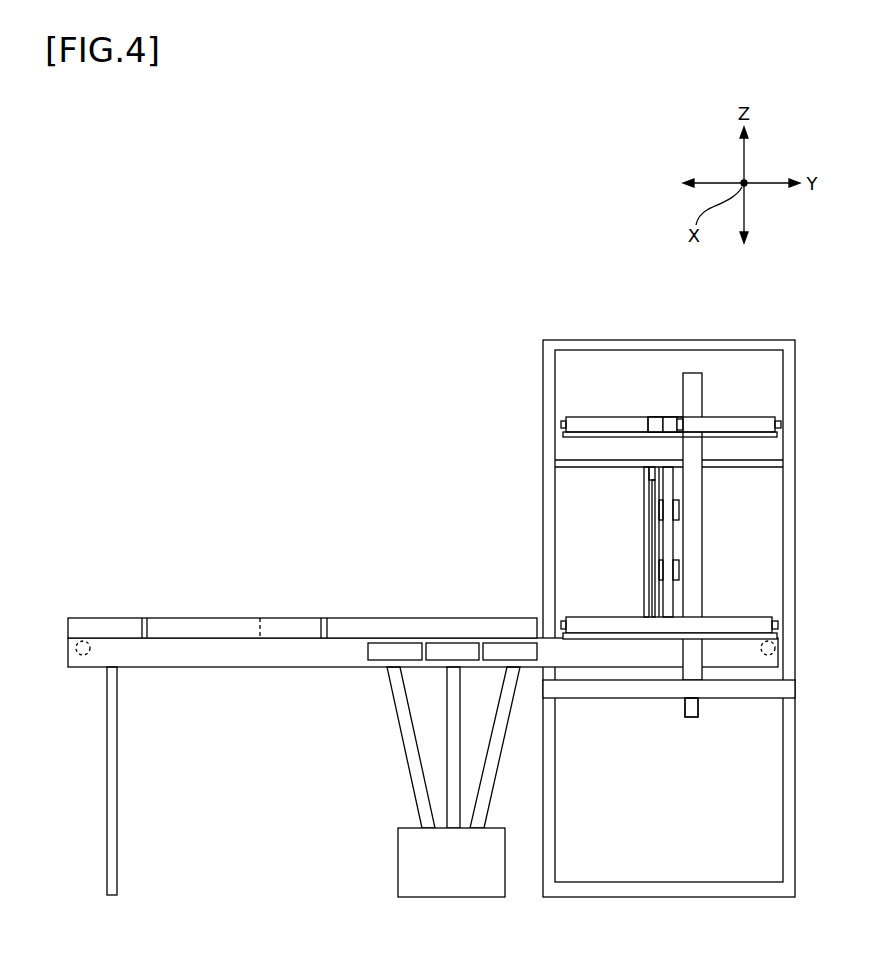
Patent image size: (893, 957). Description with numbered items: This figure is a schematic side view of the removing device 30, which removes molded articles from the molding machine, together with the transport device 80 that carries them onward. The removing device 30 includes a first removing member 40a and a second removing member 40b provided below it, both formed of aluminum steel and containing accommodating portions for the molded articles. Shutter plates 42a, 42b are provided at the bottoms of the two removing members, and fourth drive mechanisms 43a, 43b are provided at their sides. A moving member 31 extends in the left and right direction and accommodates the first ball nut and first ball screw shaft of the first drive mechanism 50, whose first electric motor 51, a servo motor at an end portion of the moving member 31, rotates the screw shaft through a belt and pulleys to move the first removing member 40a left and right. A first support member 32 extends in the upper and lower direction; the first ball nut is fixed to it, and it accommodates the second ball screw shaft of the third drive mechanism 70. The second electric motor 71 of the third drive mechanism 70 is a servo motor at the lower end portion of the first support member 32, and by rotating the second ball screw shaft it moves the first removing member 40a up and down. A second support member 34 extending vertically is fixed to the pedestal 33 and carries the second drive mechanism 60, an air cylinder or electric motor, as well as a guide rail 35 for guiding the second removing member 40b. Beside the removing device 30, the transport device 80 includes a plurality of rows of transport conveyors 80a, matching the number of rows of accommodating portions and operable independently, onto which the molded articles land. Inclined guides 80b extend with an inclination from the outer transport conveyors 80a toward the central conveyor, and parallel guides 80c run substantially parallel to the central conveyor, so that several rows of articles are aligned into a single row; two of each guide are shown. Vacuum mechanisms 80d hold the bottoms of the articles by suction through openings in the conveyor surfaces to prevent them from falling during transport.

The removing device 30 is at (772, 322).
The moving member 31 is at (672, 417).
The first support member 32 is at (693, 547).
The pedestal 33 is at (765, 690).
The second support member 34 is at (644, 507).
The guide rail 35 is at (652, 540).
The first removing member 40a is at (757, 417).
The second removing member 40b is at (755, 617).
The shutter plate 42a is at (778, 435).
The shutter plate 42b is at (777, 636).
The fourth drive mechanism 43a is at (782, 425).
The fourth drive mechanism 43b is at (779, 627).
The first drive mechanism 50 is at (670, 405).
The first electric motor 51 is at (657, 418).
The second drive mechanism 60 is at (669, 593).
The third drive mechanism 70 is at (704, 730).
The second electric motor 71 is at (690, 720).
The transport device 80 is at (423, 700).
The transport conveyors 80a is at (190, 630).
The inclined guides 80b is at (362, 623).
The parallel guides 80c is at (115, 622).
The vacuum mechanisms 80d is at (376, 764).